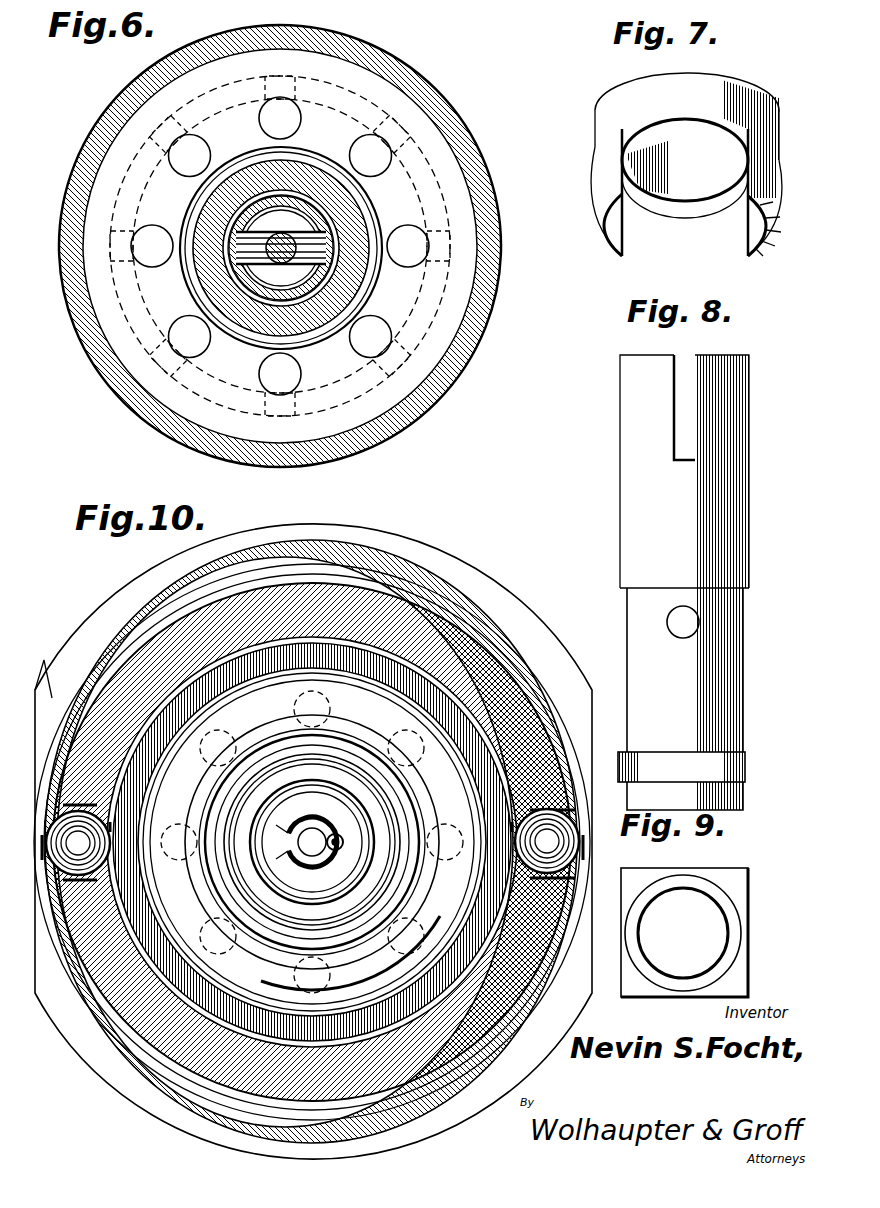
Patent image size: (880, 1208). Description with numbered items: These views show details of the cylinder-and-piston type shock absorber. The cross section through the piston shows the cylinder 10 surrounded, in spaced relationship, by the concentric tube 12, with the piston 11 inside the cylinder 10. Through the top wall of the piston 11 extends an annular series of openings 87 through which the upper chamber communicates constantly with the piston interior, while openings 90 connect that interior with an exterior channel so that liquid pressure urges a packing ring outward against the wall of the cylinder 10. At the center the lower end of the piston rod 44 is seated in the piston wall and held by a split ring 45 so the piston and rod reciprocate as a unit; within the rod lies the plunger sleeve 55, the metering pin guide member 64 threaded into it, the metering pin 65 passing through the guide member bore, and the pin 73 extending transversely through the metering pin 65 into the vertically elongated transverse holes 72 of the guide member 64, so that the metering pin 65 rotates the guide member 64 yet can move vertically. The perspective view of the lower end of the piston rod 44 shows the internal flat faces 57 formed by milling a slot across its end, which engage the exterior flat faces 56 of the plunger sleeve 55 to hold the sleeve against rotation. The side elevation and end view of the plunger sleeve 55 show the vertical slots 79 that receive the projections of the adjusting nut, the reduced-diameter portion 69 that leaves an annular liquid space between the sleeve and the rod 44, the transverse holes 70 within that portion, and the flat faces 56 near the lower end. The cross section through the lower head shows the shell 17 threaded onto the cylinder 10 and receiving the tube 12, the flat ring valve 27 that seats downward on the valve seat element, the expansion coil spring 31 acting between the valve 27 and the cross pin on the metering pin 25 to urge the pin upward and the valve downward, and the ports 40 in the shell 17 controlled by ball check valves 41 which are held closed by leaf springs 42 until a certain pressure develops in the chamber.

In FIG. 6, the cylinder 10 is at (436, 106).
In FIG. 6, the piston 11 is at (470, 272).
In FIG. 10, the tube 12 is at (443, 578).
In FIG. 10, the shell 17 is at (188, 1037).
In FIG. 10, the metering pin 25 is at (312, 827).
In FIG. 10, the valve 27 is at (430, 733).
In FIG. 10, the expansion coil spring 31 is at (267, 733).
In FIG. 10, the ports 40 is at (117, 825).
In FIG. 10, the check valves 41 is at (312, 842).
In FIG. 10, the springs 42 is at (36, 691).
In FIG. 6, the piston rod 44 is at (351, 210).
In FIG. 7, the piston rod 44 is at (735, 94).
In FIG. 6, the split ring 45 is at (373, 299).
In FIG. 6, the plunger sleeve 55 is at (218, 212).
In FIG. 8, the plunger sleeve 55 is at (735, 515).
In FIG. 9, the plunger sleeve 55 is at (716, 893).
In FIG. 8, the exterior flat faces 56 is at (747, 768).
In FIG. 9, the exterior flat faces 56 is at (750, 963).
In FIG. 7, the internal flat faces 57 is at (745, 228).
In FIG. 6, the metering pin guide member 64 is at (281, 221).
In FIG. 6, the metering pin 65 is at (274, 290).
In FIG. 8, the reduced-diameter portion 69 is at (745, 688).
In FIG. 8, the transverse holes 70 is at (683, 638).
In FIG. 6, the transverse holes 72 is at (324, 337).
In FIG. 6, the pin 73 is at (251, 259).
In FIG. 8, the vertical slots 79 is at (683, 412).
In FIG. 6, the openings 87 is at (275, 128).
In FIG. 6, the openings 90 is at (398, 397).